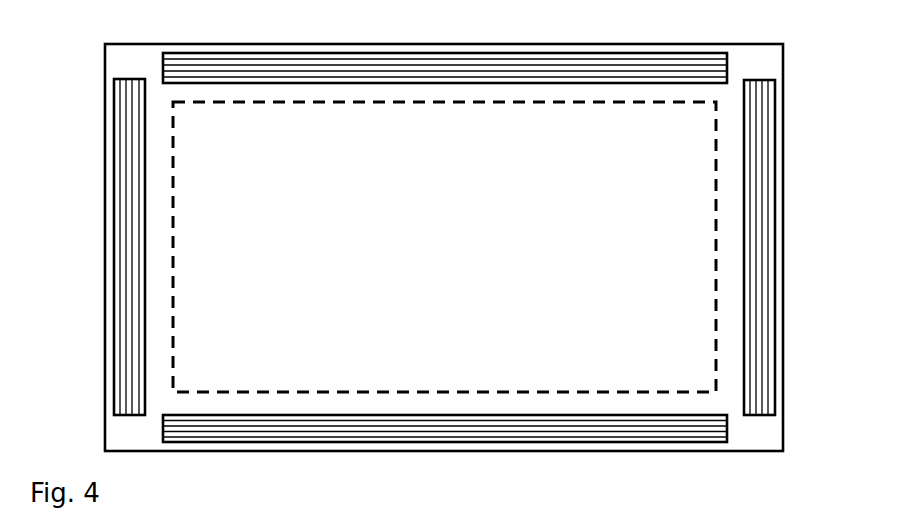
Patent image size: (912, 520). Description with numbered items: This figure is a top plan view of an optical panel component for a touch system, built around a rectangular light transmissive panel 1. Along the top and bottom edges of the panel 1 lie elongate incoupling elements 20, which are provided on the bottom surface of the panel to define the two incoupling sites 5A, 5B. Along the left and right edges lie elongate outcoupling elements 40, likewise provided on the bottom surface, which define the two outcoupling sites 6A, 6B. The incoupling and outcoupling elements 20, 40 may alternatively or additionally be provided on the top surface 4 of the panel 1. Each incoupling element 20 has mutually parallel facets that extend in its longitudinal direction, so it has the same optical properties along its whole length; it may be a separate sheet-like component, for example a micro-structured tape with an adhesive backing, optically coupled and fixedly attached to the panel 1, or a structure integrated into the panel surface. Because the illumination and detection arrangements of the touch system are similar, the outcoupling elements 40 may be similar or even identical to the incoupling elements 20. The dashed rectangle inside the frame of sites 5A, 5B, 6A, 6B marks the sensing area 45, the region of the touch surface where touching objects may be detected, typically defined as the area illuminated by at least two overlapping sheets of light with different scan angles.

The light transmissive panel 1 is at (745, 44).
The top surface 4 is at (307, 378).
The incoupling site 5A is at (418, 53).
The incoupling site 5B is at (375, 444).
The outcoupling site 6A is at (114, 238).
The outcoupling site 6B is at (775, 219).
The incoupling element 20 is at (265, 69).
The outcoupling element 40 is at (758, 324).
The sensing area 45 is at (541, 103).